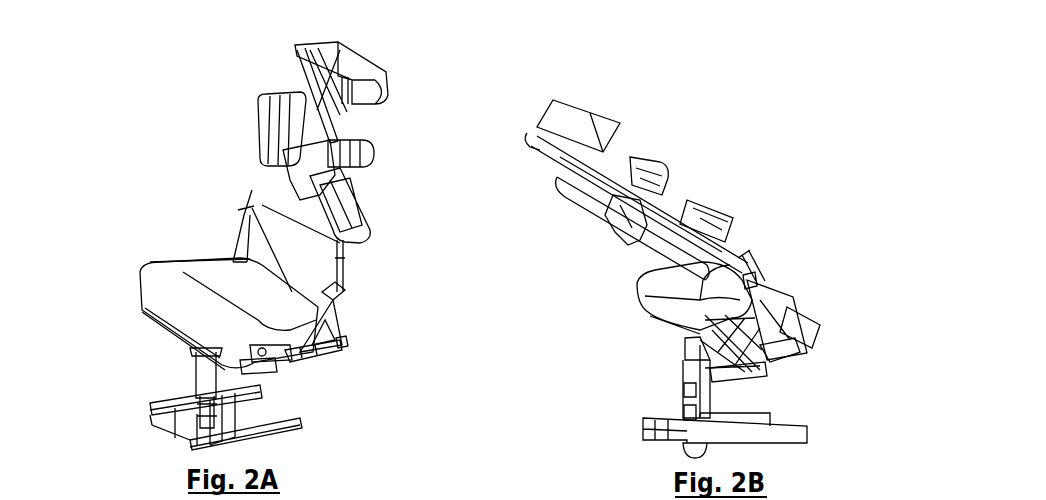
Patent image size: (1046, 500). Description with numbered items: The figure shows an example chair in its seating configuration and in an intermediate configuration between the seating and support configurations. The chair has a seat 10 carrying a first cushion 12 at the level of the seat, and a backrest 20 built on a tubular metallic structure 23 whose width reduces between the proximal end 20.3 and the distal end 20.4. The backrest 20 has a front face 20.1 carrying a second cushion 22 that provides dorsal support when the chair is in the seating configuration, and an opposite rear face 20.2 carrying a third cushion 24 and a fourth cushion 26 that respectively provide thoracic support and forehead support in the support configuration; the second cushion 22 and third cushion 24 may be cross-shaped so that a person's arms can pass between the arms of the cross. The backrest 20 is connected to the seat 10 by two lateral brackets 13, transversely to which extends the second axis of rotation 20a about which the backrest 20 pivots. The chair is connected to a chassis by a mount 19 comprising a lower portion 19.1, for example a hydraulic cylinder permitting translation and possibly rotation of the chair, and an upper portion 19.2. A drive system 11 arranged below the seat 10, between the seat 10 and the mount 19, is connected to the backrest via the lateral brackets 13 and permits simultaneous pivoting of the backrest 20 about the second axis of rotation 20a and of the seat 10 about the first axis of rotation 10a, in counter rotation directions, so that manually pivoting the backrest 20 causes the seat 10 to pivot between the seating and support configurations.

In FIG. 2A, the seat 10 is at (257, 350).
In FIG. 2A, the first axis of rotation 10a is at (255, 363).
In FIG. 2B, the first axis of rotation 10a is at (735, 332).
In FIG. 2B, the drive system 11 is at (745, 375).
In FIG. 2A, the first cushion 12 is at (217, 273).
In FIG. 2A, the lateral brackets 13 is at (327, 290).
In FIG. 2B, the lateral brackets 13 is at (792, 312).
In FIG. 2A, the mount 19 is at (165, 369).
In FIG. 2A, the lower portion 19.1 is at (203, 395).
In FIG. 2B, the lower portion 19.1 is at (690, 388).
In FIG. 2A, the upper portion 19.2 is at (207, 357).
In FIG. 2B, the upper portion 19.2 is at (683, 343).
In FIG. 2A, the backrest 20 is at (300, 152).
In FIG. 2B, the backrest 20 is at (737, 250).
In FIG. 2A, the front face 20.1 is at (273, 148).
In FIG. 2A, the rear face 20.2 is at (368, 138).
In FIG. 2A, the proximal end 20.3 is at (340, 342).
In FIG. 2A, the distal end 20.4 is at (322, 55).
In FIG. 2A, the second axis of rotation 20a is at (293, 350).
In FIG. 2B, the second axis of rotation 20a is at (775, 347).
In FIG. 2A, the second cushion 22 is at (282, 180).
In FIG. 2A, the tubular metallic structure 23 is at (242, 212).
In FIG. 2A, the third cushion 24 is at (368, 148).
In FIG. 2B, the third cushion 24 is at (520, 499).
In FIG. 2A, the fourth cushion 26 is at (365, 88).